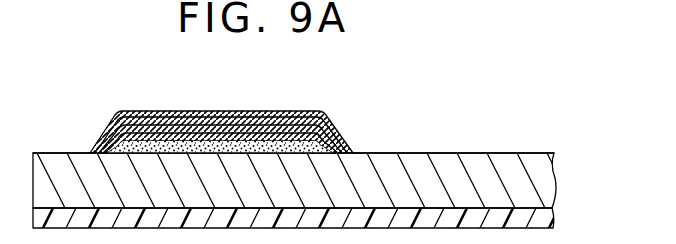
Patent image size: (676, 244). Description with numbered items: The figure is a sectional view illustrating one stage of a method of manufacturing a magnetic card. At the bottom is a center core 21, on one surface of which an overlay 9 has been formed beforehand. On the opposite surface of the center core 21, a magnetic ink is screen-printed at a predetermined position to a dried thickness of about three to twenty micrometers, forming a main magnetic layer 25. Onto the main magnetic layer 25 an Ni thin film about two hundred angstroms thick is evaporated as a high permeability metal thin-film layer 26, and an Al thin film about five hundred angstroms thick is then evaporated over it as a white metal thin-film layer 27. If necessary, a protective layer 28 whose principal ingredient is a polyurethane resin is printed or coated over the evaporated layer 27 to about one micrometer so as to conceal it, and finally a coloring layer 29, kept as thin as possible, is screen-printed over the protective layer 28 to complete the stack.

The overlay 9 is at (547, 218).
The center core 21 is at (541, 173).
The main magnetic layer 25 is at (302, 146).
The high permeability metal thin-film layer 26 is at (246, 137).
The white metal thin-film layer 27 is at (179, 140).
The protective layer 28 is at (183, 121).
The coloring layer 29 is at (138, 113).